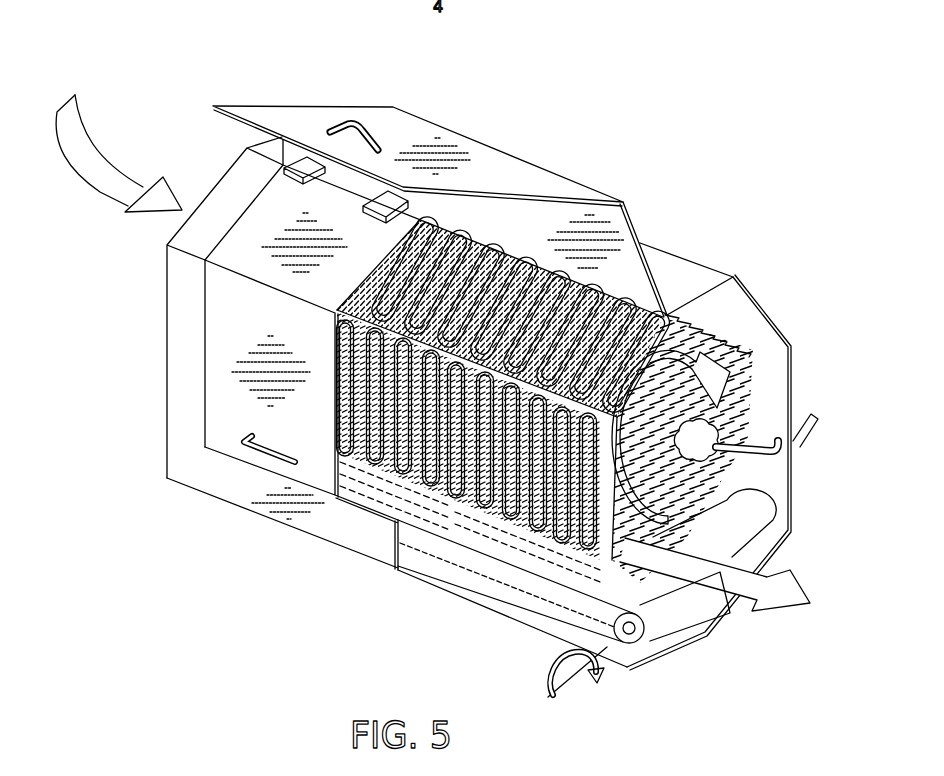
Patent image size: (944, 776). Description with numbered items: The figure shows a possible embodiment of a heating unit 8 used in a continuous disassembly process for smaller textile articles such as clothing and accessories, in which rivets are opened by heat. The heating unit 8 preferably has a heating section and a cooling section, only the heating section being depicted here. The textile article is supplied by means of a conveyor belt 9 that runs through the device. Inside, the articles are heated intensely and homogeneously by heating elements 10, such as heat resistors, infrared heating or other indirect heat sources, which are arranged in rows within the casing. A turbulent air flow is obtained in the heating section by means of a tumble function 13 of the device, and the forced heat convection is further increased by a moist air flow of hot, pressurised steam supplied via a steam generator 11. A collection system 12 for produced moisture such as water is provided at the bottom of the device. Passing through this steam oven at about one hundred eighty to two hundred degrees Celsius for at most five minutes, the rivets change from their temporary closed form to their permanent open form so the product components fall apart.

The heating unit 8 is at (746, 225).
The conveyor belt 9 is at (716, 610).
The heating elements 10 is at (532, 258).
The steam generator 11 is at (747, 452).
The collection system 12 is at (670, 638).
The tumble function 13 is at (747, 370).